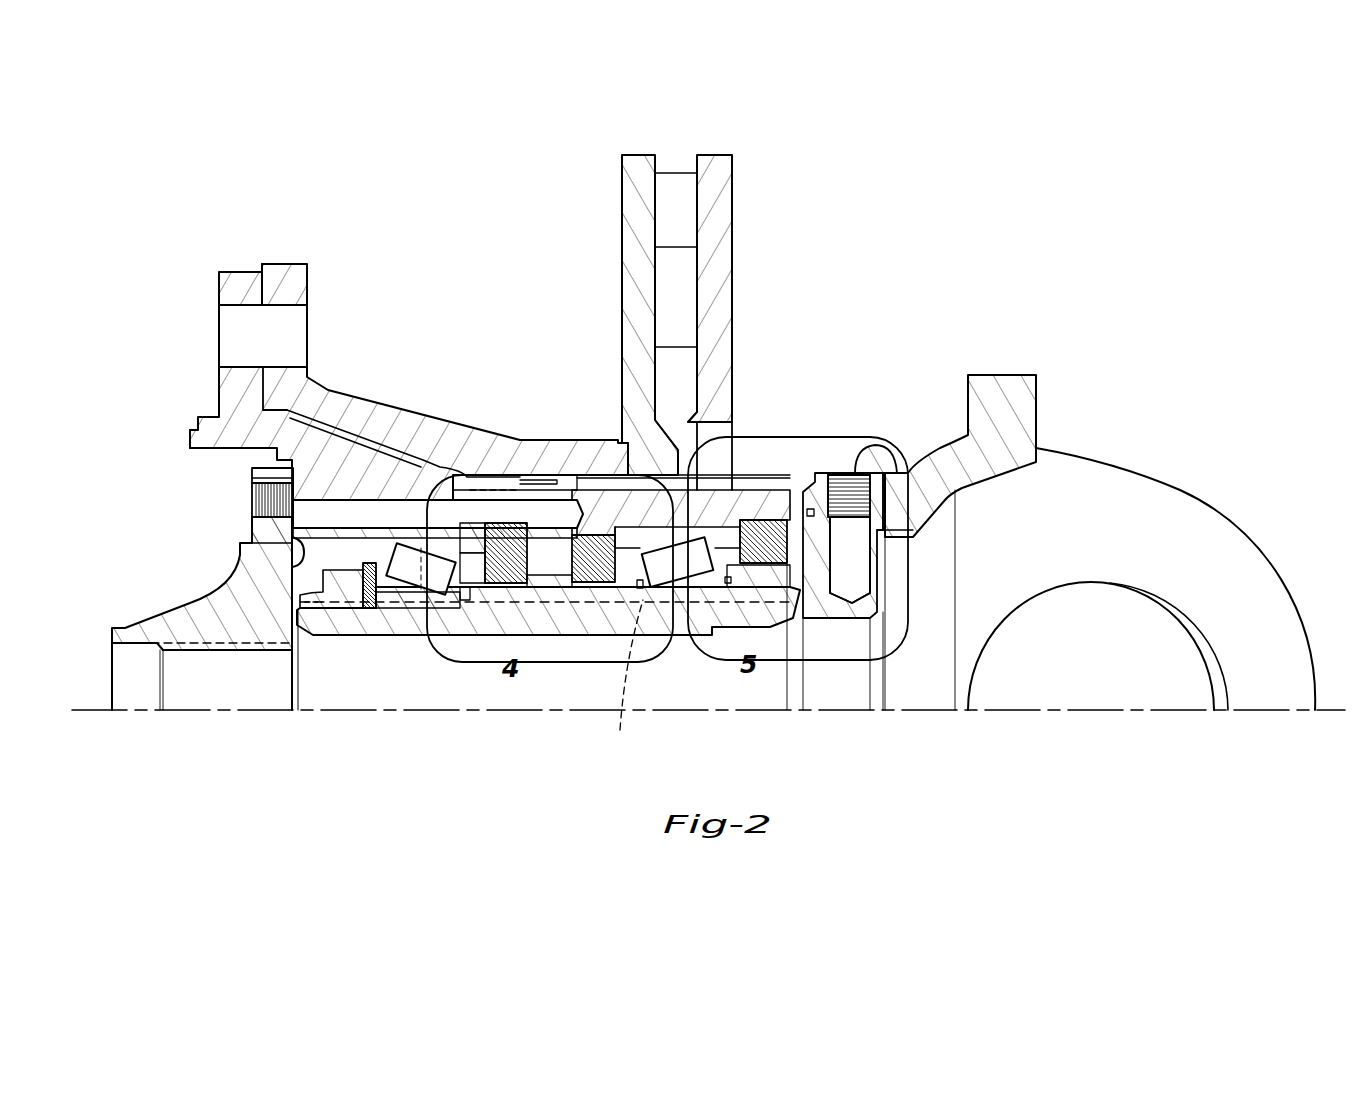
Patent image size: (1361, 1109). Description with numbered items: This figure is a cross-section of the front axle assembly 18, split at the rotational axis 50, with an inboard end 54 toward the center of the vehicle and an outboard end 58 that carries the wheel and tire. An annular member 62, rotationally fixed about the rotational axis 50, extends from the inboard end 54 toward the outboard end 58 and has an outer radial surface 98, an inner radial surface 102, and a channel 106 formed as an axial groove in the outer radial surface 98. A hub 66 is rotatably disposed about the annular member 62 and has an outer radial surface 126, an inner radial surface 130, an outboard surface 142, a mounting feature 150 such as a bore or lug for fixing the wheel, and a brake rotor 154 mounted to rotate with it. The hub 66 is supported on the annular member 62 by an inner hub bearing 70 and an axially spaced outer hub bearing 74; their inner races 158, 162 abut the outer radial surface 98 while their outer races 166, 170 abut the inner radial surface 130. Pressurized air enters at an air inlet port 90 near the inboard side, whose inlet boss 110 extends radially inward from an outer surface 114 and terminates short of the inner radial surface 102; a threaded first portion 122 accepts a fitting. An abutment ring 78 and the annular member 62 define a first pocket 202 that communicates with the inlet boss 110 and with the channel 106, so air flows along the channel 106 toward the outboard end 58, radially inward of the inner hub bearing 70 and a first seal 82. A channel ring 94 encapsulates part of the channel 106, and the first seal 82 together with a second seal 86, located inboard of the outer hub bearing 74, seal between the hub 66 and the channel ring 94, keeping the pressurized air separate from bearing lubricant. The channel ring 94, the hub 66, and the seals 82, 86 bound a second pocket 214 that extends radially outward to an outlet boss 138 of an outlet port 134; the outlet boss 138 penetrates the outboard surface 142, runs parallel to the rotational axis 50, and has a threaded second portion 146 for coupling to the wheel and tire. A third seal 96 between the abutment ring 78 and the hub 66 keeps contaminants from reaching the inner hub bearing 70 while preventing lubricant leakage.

The front axle assembly 18 is at (1186, 297).
The rotational axis 50 is at (1095, 716).
The inboard end 54 is at (1315, 672).
The outboard end 58 is at (112, 680).
The annular member 62 is at (333, 633).
The hub 66 is at (190, 440).
The inner hub bearing 70 is at (727, 530).
The outer hub bearing 74 is at (405, 590).
The abutment ring 78 is at (802, 573).
The first seal 82 is at (592, 540).
The second seal 86 is at (493, 540).
The air inlet port 90 is at (842, 475).
The channel ring 94 is at (450, 637).
The third seal 96 is at (775, 520).
The outer radial surface 98 is at (530, 597).
The inner radial surface 102 is at (447, 643).
The channel 106 is at (622, 681).
The inlet boss 110 is at (877, 535).
The outer surface 114 is at (887, 450).
The first portion 122 is at (880, 493).
The outer radial surface 126 is at (545, 488).
The inner radial surface 130 is at (298, 563).
The outlet port 134 is at (252, 500).
The outlet boss 138 is at (313, 497).
The outboard surface 142 is at (252, 532).
The second portion 146 is at (252, 497).
The mounting feature 150 is at (222, 322).
The brake rotor 154 is at (622, 178).
The inner race 158 is at (703, 583).
The inner race 162 is at (385, 596).
The outer race 166 is at (655, 495).
The outer race 170 is at (400, 548).
The first pocket 202 is at (820, 548).
The second pocket 214 is at (562, 580).